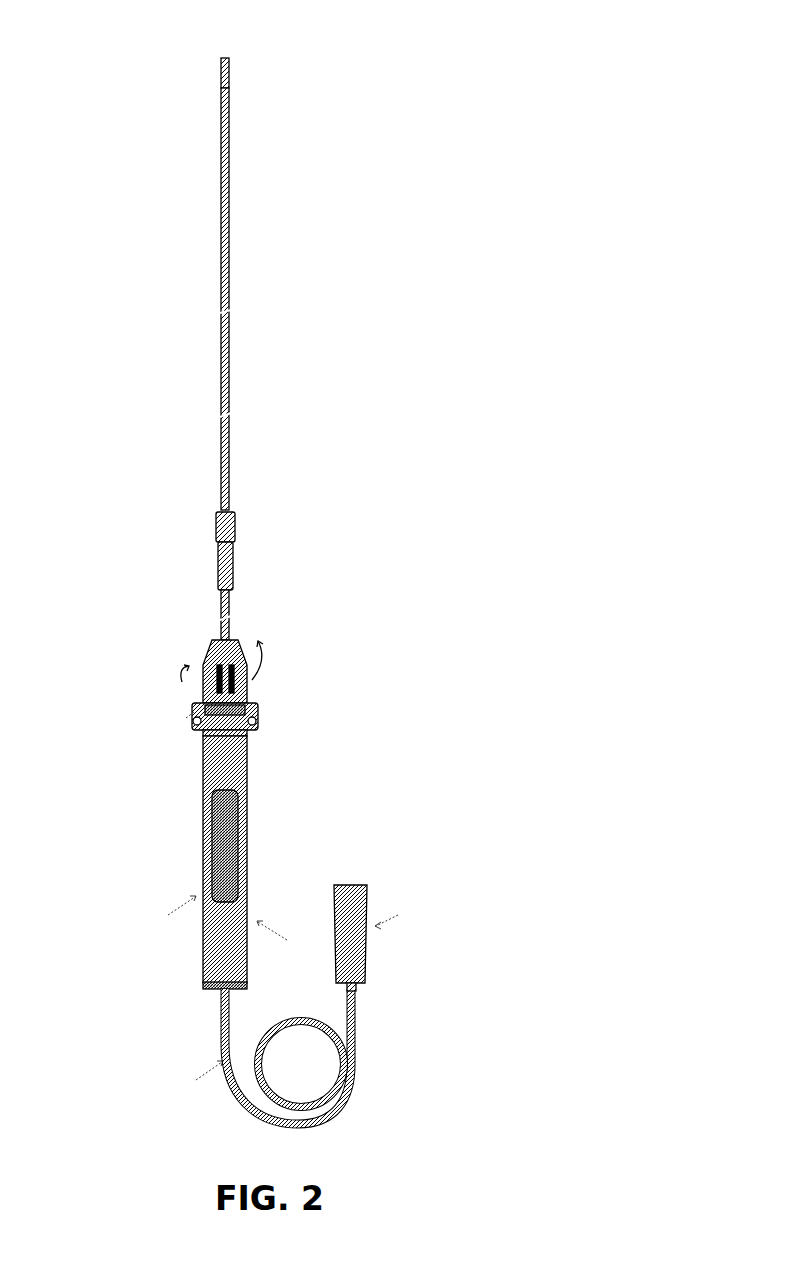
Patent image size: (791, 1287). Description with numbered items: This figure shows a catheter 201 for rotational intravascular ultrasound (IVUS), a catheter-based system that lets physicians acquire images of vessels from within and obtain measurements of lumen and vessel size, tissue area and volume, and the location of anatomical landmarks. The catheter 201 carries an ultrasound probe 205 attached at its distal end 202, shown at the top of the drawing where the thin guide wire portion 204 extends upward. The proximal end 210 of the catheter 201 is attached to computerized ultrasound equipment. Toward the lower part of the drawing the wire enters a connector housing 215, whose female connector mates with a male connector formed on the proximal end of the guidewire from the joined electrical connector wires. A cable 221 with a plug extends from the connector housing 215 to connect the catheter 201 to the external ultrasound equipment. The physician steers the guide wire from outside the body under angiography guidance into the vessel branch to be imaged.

The catheter 201 is at (314, 575).
The distal end 202 is at (196, 268).
The wire body 204 is at (229, 128).
The ultrasound probe 205 is at (229, 67).
The proximal end 210 is at (172, 493).
The connector housing 215 is at (249, 778).
The cable with plug 221 is at (383, 1000).